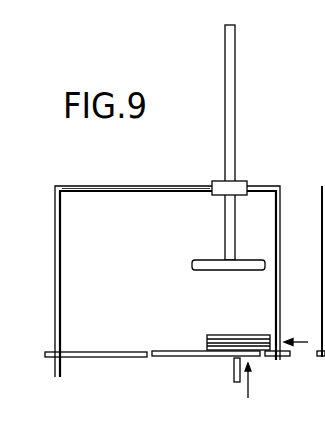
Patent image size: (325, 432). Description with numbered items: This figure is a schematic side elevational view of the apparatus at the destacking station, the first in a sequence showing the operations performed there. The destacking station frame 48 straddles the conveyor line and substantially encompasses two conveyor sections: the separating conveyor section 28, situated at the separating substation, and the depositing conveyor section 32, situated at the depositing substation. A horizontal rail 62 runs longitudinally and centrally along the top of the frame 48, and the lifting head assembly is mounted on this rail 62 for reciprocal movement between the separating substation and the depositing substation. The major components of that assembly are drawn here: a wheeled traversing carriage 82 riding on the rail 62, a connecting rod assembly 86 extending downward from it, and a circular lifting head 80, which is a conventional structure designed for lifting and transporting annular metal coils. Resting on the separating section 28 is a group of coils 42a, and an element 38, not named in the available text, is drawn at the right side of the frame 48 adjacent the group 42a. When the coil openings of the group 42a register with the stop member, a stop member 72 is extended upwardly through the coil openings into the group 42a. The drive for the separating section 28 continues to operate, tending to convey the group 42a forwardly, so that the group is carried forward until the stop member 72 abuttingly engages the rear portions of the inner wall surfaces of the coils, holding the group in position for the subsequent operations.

The destacking station frame 48 is at (56, 203).
The horizontal rail 62 is at (130, 191).
The connecting rod assembly 86 is at (224, 68).
The traversing carriage 82 is at (247, 182).
The lifting head 80 is at (267, 263).
The group of coils 42a is at (208, 338).
The side wall 38 is at (270, 338).
The depositing conveyor section 32 is at (92, 358).
The separating conveyor section 28 is at (168, 358).
The stop member 72 is at (233, 372).